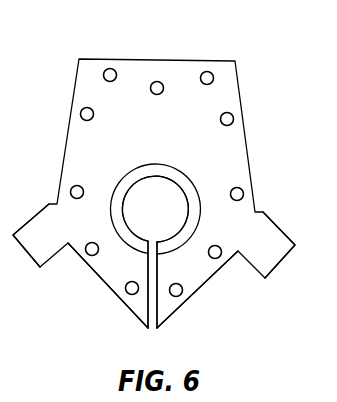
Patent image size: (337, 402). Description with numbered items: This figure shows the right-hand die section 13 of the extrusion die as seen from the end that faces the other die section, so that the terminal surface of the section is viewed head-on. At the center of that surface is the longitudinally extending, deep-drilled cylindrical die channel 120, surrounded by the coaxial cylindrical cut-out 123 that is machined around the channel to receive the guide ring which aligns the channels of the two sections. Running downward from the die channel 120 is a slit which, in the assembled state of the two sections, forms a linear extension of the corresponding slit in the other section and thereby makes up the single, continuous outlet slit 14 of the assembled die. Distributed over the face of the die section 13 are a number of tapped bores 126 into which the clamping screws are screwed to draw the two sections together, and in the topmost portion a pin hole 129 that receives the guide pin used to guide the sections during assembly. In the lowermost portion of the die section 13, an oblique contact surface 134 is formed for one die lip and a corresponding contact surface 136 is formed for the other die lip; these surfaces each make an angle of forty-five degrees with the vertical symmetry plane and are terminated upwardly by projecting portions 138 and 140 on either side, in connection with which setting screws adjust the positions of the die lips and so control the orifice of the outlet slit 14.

The die section 13 is at (235, 61).
The outlet slit 14 is at (153, 328).
The die channel 120 is at (182, 196).
The cylindrical cut-out 123 is at (181, 178).
The tapped bore 126 is at (109, 68).
The pin hole 129 is at (157, 82).
The oblique contact surface 134 is at (206, 285).
The contact surface 136 is at (103, 285).
The projecting portion 138 is at (294, 246).
The projecting portion 140 is at (15, 238).